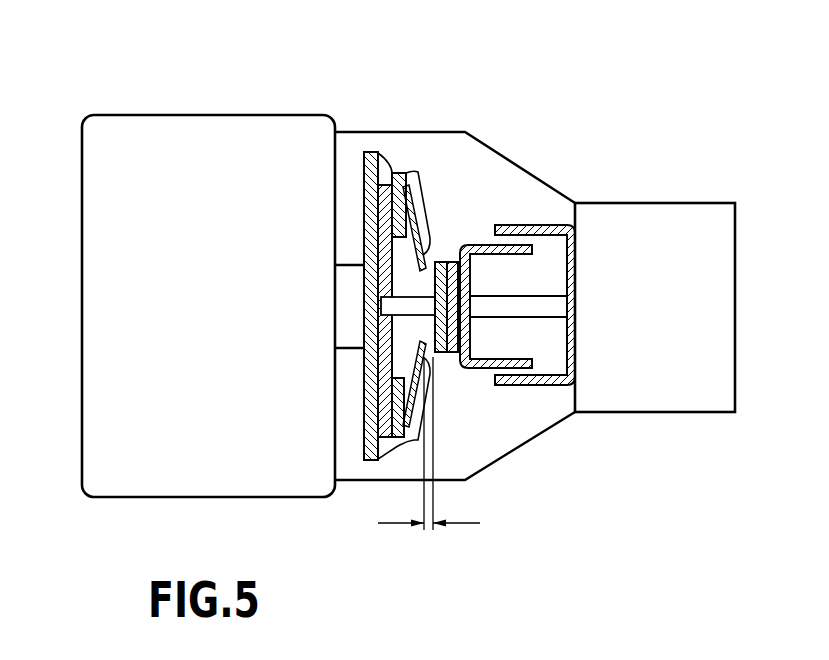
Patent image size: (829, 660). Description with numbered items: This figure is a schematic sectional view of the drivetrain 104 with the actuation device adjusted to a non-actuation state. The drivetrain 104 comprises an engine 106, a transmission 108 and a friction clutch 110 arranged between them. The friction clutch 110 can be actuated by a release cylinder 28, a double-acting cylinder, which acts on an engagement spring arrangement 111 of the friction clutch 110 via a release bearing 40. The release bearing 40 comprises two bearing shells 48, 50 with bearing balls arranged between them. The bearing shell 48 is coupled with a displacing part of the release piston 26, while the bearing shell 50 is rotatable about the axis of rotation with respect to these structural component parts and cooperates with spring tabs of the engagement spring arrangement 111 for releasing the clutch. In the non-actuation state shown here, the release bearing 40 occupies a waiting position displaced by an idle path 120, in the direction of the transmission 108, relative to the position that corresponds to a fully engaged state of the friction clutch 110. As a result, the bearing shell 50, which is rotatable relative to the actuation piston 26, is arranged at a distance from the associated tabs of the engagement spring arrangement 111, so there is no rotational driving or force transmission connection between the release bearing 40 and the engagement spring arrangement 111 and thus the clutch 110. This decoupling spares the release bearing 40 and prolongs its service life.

The drivetrain 104 is at (110, 81).
The engine 106 is at (143, 490).
The transmission 108 is at (710, 207).
The friction clutch 110 is at (368, 146).
The engagement spring arrangement 111 is at (428, 252).
The bearing shell 50 is at (447, 258).
The bearing shell 48 is at (460, 247).
The release piston 26 is at (493, 254).
The release cylinder 28 is at (542, 387).
The release bearing 40 is at (448, 378).
The idle path 120 is at (428, 526).